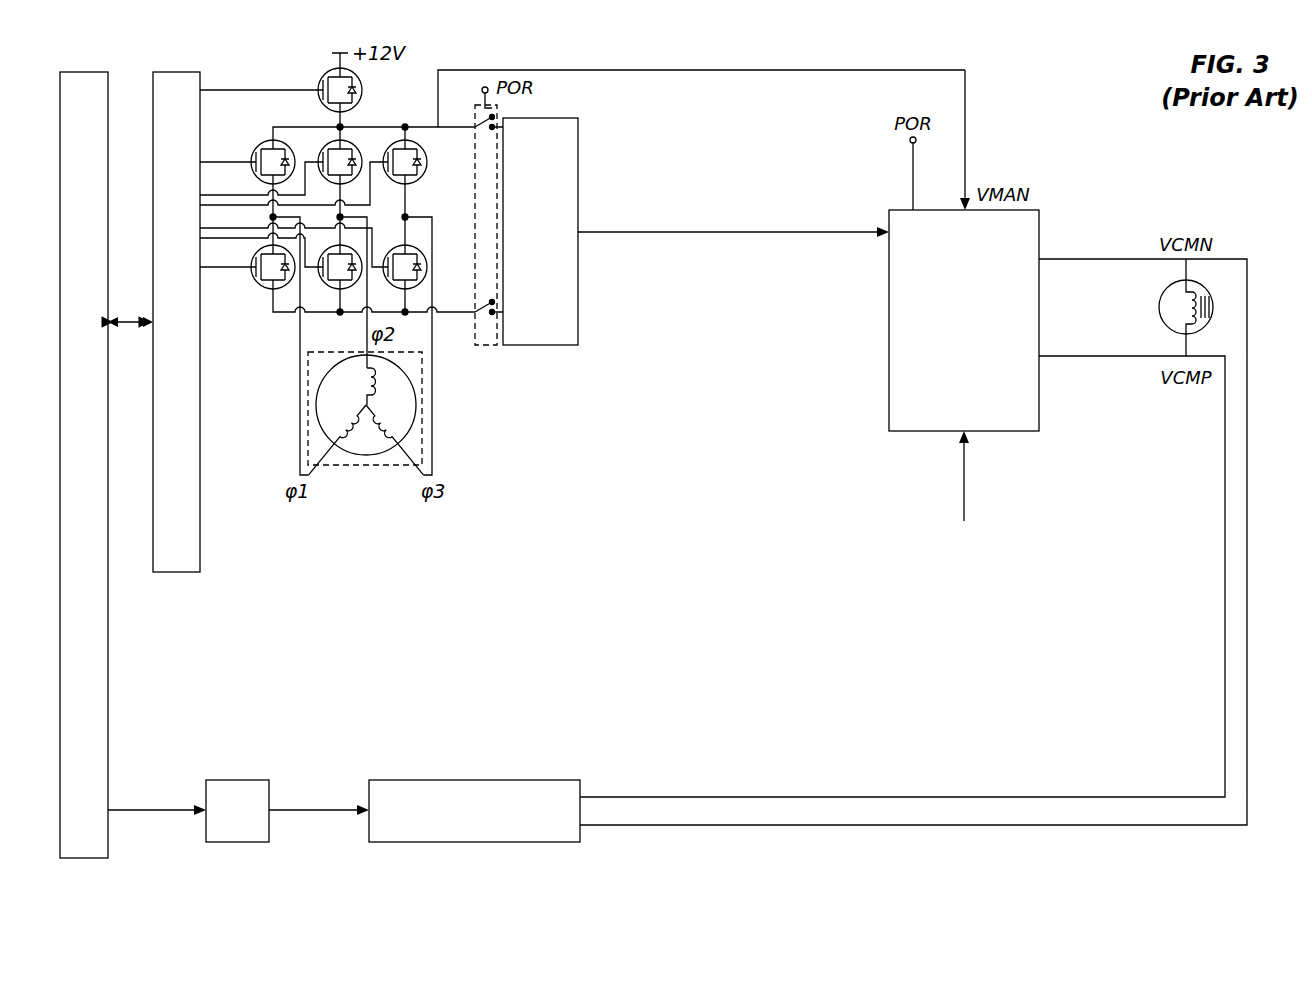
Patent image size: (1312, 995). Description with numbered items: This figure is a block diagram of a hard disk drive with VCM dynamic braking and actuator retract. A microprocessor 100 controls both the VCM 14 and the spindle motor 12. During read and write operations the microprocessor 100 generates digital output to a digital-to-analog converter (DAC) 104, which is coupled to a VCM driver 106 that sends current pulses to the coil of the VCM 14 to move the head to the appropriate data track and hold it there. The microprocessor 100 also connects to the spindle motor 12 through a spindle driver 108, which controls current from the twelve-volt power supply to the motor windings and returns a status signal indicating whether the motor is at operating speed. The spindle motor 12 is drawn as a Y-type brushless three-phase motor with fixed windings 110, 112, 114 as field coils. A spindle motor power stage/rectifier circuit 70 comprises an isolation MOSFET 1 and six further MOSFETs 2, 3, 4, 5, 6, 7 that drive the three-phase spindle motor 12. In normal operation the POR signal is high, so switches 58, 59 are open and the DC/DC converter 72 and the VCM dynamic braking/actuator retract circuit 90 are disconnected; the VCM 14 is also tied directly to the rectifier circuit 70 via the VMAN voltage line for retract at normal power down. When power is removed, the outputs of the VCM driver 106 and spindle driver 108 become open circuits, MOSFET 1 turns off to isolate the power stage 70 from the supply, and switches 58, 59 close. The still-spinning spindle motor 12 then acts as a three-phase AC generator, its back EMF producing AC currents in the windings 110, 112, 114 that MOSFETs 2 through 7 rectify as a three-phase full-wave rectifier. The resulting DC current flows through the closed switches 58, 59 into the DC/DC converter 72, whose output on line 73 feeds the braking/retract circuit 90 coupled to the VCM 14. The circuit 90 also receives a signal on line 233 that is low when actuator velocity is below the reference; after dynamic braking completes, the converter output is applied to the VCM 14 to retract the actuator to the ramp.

The isolation MOSFET 1 is at (322, 82).
The MOSFET 2 is at (264, 145).
The MOSFET 3 is at (333, 142).
The MOSFET 4 is at (425, 167).
The MOSFET 5 is at (265, 286).
The MOSFET 6 is at (334, 290).
The MOSFET 7 is at (425, 264).
The spindle motor 12 is at (373, 466).
The VCM 14 is at (1160, 311).
The switch 58 is at (484, 121).
The switch 59 is at (484, 306).
The spindle motor power stage/rectifier circuit 70 is at (382, 127).
The DC/DC converter 72 is at (578, 155).
The line 73 is at (645, 232).
The VCM dynamic braking/actuator retract circuit 90 is at (1039, 237).
The microprocessor 100 is at (108, 765).
The digital-to-analog converter (DAC) 104 is at (245, 780).
The VCM driver 106 is at (558, 780).
The spindle driver 108 is at (200, 528).
The winding 110 is at (335, 420).
The winding 112 is at (378, 385).
The winding 114 is at (397, 427).
The line 233 is at (964, 480).